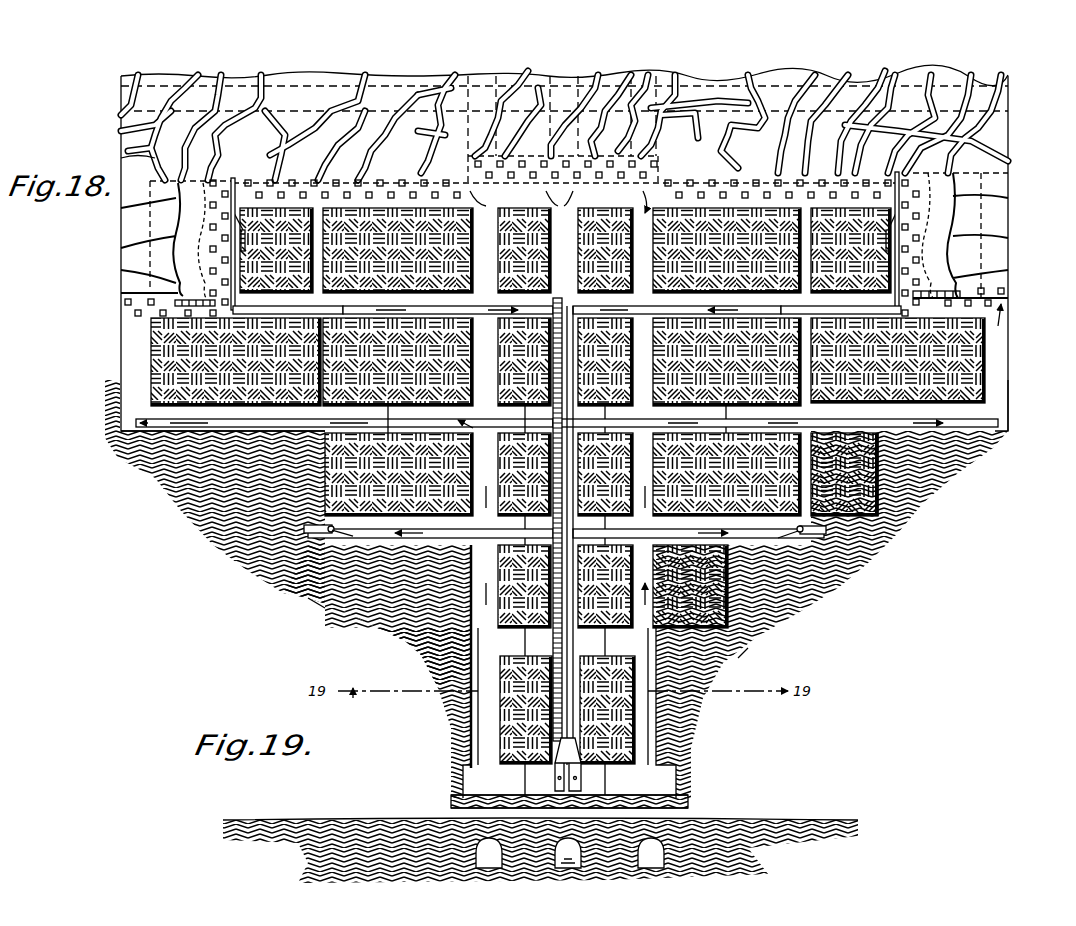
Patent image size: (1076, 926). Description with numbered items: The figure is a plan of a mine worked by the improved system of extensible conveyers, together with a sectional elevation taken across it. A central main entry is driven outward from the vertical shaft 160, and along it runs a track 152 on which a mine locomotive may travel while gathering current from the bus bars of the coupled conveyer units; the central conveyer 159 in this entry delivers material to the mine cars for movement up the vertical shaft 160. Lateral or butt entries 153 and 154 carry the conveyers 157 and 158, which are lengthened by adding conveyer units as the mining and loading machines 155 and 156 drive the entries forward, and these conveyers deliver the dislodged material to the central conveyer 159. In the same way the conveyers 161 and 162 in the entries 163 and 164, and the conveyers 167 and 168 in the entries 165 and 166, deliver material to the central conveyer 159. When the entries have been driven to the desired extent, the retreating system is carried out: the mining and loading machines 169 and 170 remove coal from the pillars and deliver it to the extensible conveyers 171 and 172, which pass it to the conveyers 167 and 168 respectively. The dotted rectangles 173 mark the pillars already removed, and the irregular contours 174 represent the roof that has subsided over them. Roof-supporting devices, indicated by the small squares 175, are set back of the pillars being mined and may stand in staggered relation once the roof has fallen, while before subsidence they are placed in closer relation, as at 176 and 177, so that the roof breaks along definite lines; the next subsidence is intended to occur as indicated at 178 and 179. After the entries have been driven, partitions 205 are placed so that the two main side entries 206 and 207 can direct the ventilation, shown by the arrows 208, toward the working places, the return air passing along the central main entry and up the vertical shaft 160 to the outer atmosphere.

In FIG. 18, the track 152 is at (545, 406).
In FIG. 19, the track 152 is at (540, 835).
In FIG. 18, the lateral or butt entry 153 is at (345, 548).
In FIG. 18, the lateral or butt entry 154 is at (740, 515).
In FIG. 18, the mining and loading machine 155 is at (300, 528).
In FIG. 18, the mining and loading machine 156 is at (820, 525).
In FIG. 18, the conveyer 157 is at (420, 532).
In FIG. 18, the conveyer 158 is at (680, 530).
In FIG. 18, the central conveyer 159 is at (566, 636).
In FIG. 19, the central conveyer 159 is at (600, 816).
In FIG. 18, the vertical shaft 160 is at (575, 768).
In FIG. 18, the conveyer 161 is at (232, 418).
In FIG. 18, the conveyer 162 is at (870, 415).
In FIG. 18, the entry 163 is at (200, 408).
In FIG. 18, the entry 164 is at (915, 400).
In FIG. 18, the entry 165 is at (288, 305).
In FIG. 18, the entry 166 is at (820, 290).
In FIG. 18, the conveyer 167 is at (402, 310).
In FIG. 18, the conveyer 168 is at (634, 310).
In FIG. 18, the mining and loading machine 169 is at (233, 230).
In FIG. 18, the mining and loading machine 170 is at (885, 222).
In FIG. 18, the extensible conveyer 171 is at (223, 193).
In FIG. 18, the extensible conveyer 172 is at (892, 185).
In FIG. 18, the dotted rectangles 173 is at (128, 88).
In FIG. 18, the irregular contours 174 is at (140, 145).
In FIG. 18, the small squares 175 is at (485, 172).
In FIG. 18, the roof-supporting devices in closer relation 176 is at (190, 298).
In FIG. 18, the roof-supporting devices in closer relation 177 is at (955, 288).
In FIG. 18, the next roof subsidence location 178 is at (190, 230).
In FIG. 18, the next roof subsidence location 179 is at (925, 233).
In FIG. 18, the partitions 205 is at (438, 400).
In FIG. 18, the main side entry 206 is at (480, 720).
In FIG. 18, the main side entry 207 is at (648, 716).
In FIG. 18, the arrows 208 is at (420, 600).